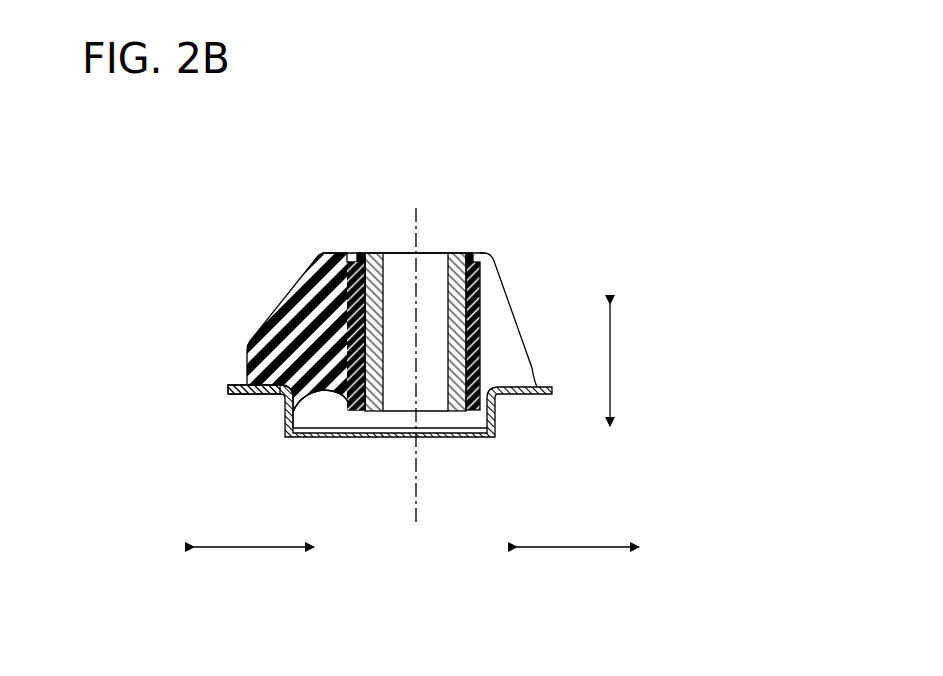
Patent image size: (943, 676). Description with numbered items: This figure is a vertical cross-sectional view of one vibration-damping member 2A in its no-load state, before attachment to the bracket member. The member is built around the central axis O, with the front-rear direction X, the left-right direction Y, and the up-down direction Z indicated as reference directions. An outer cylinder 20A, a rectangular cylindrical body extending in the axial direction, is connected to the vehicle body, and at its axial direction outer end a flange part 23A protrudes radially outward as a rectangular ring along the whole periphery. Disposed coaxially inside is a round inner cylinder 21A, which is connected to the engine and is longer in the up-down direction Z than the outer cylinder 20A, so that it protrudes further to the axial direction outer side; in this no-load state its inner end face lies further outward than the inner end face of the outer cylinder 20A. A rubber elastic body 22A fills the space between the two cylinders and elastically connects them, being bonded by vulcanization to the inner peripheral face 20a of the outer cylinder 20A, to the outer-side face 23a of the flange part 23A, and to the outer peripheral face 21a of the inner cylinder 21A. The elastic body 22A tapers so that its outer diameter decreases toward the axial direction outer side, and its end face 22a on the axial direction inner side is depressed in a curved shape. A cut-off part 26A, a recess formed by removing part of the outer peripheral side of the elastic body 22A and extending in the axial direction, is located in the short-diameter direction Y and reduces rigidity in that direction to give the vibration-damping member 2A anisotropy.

The vibration-damping member 2A is at (520, 155).
The outer cylinder 20A is at (287, 438).
The inner peripheral face 20a is at (302, 415).
The inner cylinder 21A is at (455, 412).
The outer peripheral face 21a is at (364, 311).
The elastic body 22A is at (292, 307).
The end face 22a is at (343, 396).
The flange part 23A is at (228, 388).
The outer-side face 23a is at (238, 383).
The cut-off part 26A is at (508, 325).
The central axis O is at (420, 220).
The front-rear direction X is at (260, 548).
The left-right direction Y is at (580, 548).
The up-down direction Z is at (611, 365).